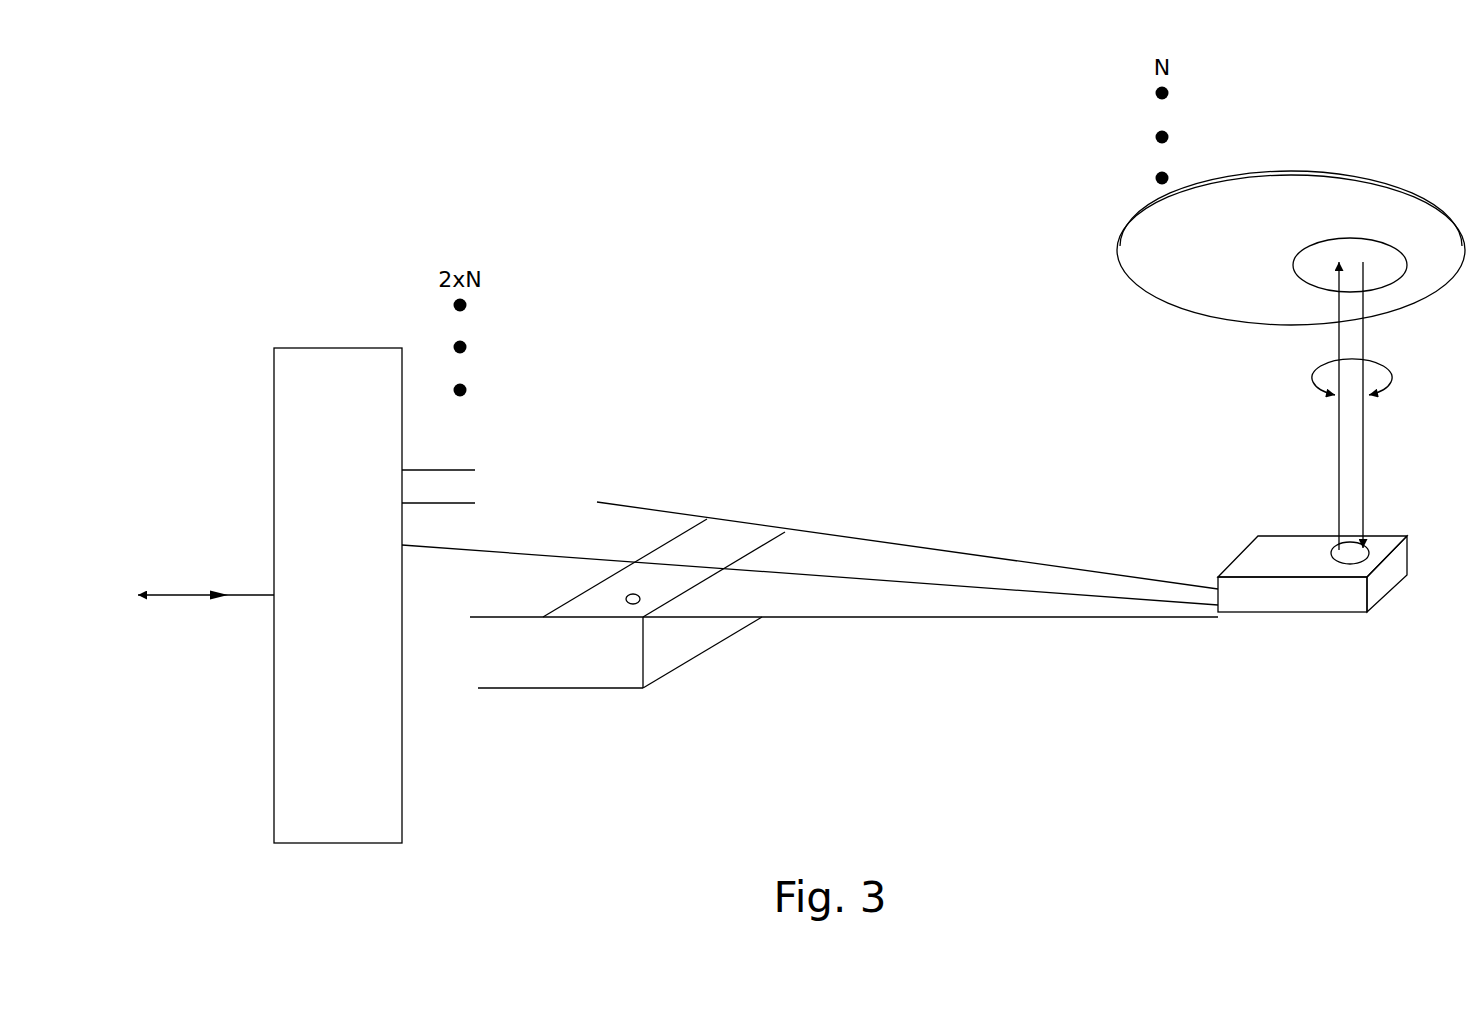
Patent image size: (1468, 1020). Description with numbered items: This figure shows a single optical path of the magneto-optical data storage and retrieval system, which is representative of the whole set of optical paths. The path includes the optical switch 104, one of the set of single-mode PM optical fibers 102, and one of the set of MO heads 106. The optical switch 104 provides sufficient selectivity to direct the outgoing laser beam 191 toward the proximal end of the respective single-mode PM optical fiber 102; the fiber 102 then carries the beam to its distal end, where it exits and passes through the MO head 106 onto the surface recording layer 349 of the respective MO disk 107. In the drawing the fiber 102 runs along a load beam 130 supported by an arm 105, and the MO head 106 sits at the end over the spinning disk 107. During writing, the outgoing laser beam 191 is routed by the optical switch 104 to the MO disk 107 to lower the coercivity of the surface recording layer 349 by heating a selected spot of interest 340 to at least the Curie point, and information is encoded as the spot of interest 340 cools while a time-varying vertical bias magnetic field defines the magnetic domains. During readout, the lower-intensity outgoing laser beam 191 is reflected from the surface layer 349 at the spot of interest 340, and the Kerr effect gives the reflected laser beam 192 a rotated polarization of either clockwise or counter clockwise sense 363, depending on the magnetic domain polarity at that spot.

The single-mode PM optical fiber 102 is at (542, 547).
The optical switch 104 is at (316, 347).
The actuator arm 105 is at (570, 692).
The MO head 106 is at (1303, 614).
The MO disk 107 is at (1160, 303).
The load beam 130 is at (935, 619).
The outgoing laser beam 191 is at (1335, 445).
The reflected laser beam 192 is at (1364, 472).
The spot of interest 340 is at (1383, 256).
The surface recording layer 349 is at (1293, 197).
The clockwise or counter clockwise sense 363 is at (1376, 377).